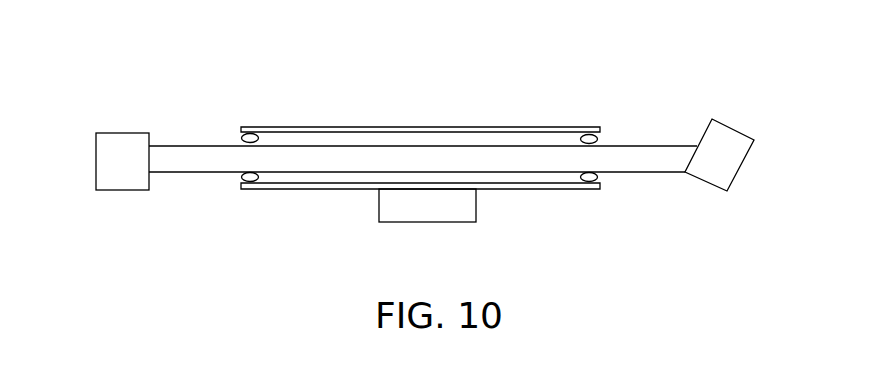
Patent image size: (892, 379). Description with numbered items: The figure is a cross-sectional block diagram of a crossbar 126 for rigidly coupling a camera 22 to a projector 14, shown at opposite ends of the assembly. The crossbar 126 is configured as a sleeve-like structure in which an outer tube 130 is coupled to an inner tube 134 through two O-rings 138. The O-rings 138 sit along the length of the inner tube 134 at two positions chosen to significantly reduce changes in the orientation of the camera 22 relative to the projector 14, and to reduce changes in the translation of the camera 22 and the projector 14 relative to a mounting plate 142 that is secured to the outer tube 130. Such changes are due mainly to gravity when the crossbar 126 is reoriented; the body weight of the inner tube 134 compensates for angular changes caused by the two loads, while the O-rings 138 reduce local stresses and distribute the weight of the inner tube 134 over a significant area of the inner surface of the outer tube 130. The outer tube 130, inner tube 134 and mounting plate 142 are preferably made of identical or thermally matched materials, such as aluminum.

The crossbar 126 is at (413, 60).
The camera 22 is at (96, 160).
The inner tube 134 is at (647, 173).
The outer tube 130 is at (480, 125).
The O-rings 138 is at (598, 140).
The mounting plate 142 is at (425, 222).
The projector 14 is at (740, 168).